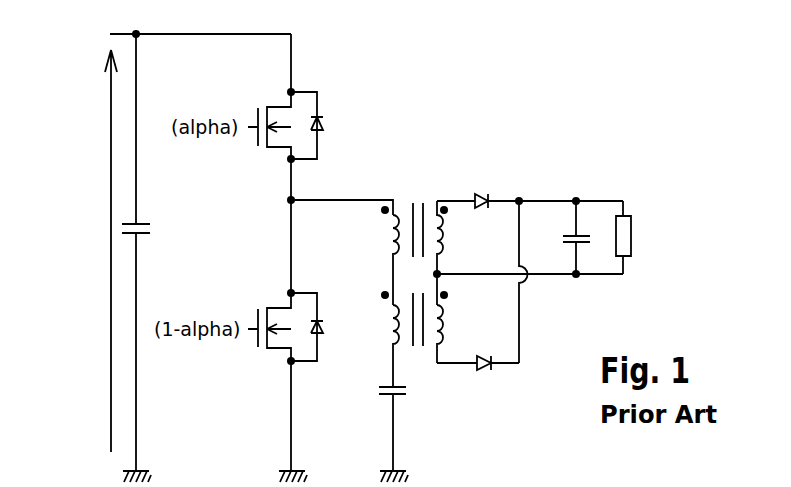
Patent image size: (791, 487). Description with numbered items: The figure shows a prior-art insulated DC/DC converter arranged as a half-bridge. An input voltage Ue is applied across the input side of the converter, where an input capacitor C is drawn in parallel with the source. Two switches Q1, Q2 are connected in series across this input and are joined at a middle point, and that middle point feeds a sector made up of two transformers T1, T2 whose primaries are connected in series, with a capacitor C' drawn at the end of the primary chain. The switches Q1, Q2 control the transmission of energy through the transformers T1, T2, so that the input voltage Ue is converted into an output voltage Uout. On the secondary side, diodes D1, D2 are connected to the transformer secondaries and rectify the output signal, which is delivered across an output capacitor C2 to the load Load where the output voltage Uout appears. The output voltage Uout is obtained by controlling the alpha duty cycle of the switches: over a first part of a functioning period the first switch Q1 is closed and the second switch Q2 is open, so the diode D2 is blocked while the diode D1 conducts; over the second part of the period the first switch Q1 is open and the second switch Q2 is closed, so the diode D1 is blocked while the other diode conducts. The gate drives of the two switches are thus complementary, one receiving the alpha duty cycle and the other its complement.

The input voltage Ue is at (89, 251).
The input capacitor C is at (145, 252).
The first switch Q1 is at (302, 125).
The second switch Q2 is at (302, 327).
The first transformer T1 is at (414, 239).
The second transformer T2 is at (414, 339).
The primary-side capacitor C' is at (380, 425).
The first diode D1 is at (530, 187).
The second diode D2 is at (478, 378).
The output capacitor C2 is at (560, 237).
The load Load is at (650, 237).
The output voltage Uout is at (604, 189).